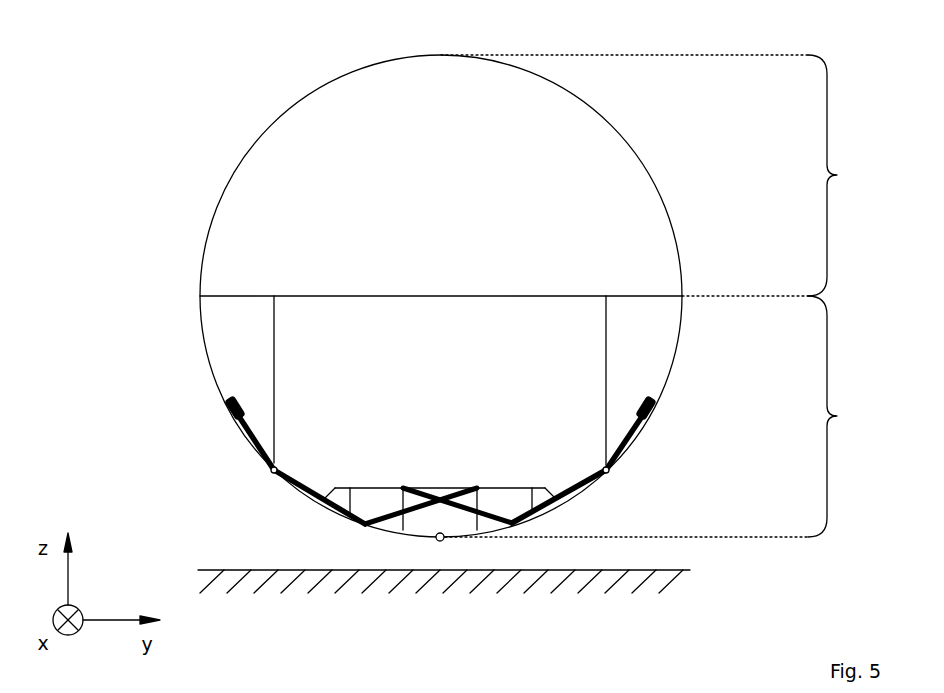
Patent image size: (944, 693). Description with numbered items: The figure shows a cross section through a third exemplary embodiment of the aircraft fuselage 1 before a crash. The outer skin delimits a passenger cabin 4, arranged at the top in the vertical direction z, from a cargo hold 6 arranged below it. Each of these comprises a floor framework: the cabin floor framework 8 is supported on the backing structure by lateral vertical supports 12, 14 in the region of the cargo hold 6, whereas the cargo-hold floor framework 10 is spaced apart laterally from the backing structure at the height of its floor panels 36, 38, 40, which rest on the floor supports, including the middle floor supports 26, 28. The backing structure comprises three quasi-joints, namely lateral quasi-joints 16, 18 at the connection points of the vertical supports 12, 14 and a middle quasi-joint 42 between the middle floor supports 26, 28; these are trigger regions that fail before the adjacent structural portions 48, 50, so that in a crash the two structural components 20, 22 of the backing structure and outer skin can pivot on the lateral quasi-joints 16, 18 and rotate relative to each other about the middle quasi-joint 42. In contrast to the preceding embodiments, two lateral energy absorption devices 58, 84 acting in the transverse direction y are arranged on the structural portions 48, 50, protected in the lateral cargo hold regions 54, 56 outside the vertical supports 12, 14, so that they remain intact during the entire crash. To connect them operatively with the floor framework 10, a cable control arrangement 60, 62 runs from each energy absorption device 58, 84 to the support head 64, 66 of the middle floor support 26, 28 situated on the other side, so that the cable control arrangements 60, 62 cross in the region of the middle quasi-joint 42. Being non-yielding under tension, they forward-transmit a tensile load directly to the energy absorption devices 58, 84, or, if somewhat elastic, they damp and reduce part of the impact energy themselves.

The aircraft fuselage 1 is at (35, 35).
The passenger cabin 4 is at (649, 175).
The cargo hold 6 is at (656, 416).
The cabin floor framework 8 is at (582, 296).
The cargo-hold floor framework 10 is at (560, 469).
The vertical support 12 is at (273, 379).
The vertical support 14 is at (607, 320).
The lateral quasi-joint 16 is at (271, 471).
The lateral quasi-joint 18 is at (609, 471).
The structural component 20 is at (382, 529).
The structural component 22 is at (495, 530).
The middle floor support 26 is at (404, 529).
The middle floor support 28 is at (477, 527).
The floor panel 36 is at (378, 488).
The floor panel 38 is at (434, 488).
The floor panel 40 is at (503, 488).
The middle quasi-joint 42 is at (440, 541).
The structural portion 48 is at (208, 360).
The structural portion 50 is at (680, 318).
The lateral cargo hold region 54 is at (238, 317).
The lateral cargo hold region 56 is at (647, 320).
The lateral energy absorption device 58 is at (227, 403).
The cable control arrangement 60 is at (250, 445).
The cable control arrangement 62 is at (614, 452).
The support head 64 is at (365, 525).
The support head 66 is at (512, 525).
The lateral energy absorption device 84 is at (653, 410).